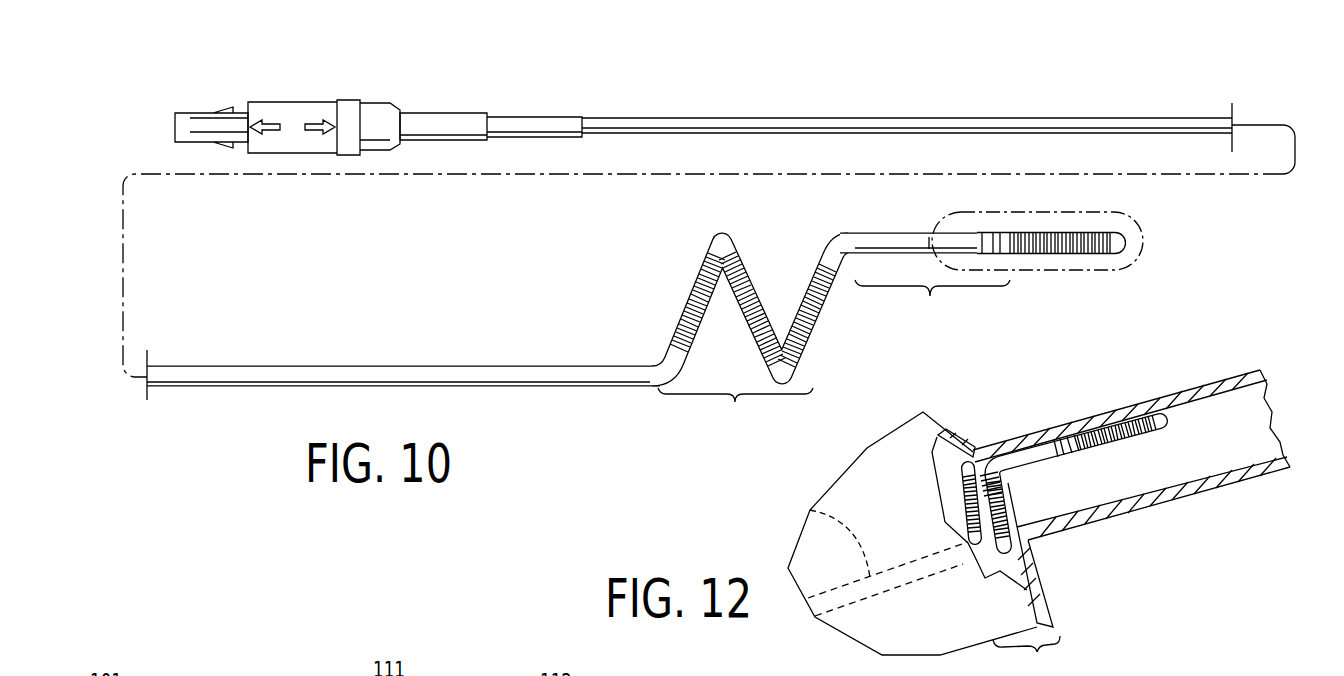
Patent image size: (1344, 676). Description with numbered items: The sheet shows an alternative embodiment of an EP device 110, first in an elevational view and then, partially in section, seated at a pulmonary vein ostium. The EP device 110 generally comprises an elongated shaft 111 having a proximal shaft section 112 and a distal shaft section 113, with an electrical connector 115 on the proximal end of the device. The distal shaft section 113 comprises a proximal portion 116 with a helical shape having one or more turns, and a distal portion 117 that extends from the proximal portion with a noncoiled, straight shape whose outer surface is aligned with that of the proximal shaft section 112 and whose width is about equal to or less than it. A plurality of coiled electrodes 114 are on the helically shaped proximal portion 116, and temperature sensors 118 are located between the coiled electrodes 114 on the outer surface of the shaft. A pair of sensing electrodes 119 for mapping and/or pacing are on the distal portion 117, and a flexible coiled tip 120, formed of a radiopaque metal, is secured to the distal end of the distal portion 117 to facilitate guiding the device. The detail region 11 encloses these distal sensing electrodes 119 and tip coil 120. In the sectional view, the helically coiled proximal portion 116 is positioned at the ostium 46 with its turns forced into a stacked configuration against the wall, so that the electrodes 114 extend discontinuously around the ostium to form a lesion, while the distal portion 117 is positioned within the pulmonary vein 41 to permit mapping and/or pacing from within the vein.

In FIG. 10, the detail region of distal electrode section 11 is at (1140, 258).
In FIG. 12, the pulmonary vein 41 is at (1250, 425).
In FIG. 12, the ostium 46 is at (962, 466).
In FIG. 10, the EP device 110 is at (838, 110).
In FIG. 12, the EP device 110 is at (812, 510).
In FIG. 10, the elongated shaft 111 is at (1013, 118).
In FIG. 10, the proximal shaft section 112 is at (613, 118).
In FIG. 10, the distal shaft section 113 is at (660, 346).
In FIG. 10, the electrodes 114 is at (753, 282).
In FIG. 12, the electrodes 114 is at (983, 570).
In FIG. 10, the electrical connector 115 is at (250, 102).
In FIG. 10, the proximal portion 116 is at (750, 338).
In FIG. 12, the proximal portion 116 is at (1011, 572).
In FIG. 10, the distal portion 117 is at (925, 279).
In FIG. 12, the distal portion 117 is at (1040, 452).
In FIG. 10, the temperature sensors 118 is at (760, 335).
In FIG. 10, the sensing electrodes 119 is at (1000, 232).
In FIG. 12, the sensing electrodes 119 is at (1071, 450).
In FIG. 10, the flexible coiled tip 120 is at (1067, 253).
In FIG. 12, the flexible coiled tip 120 is at (1123, 422).